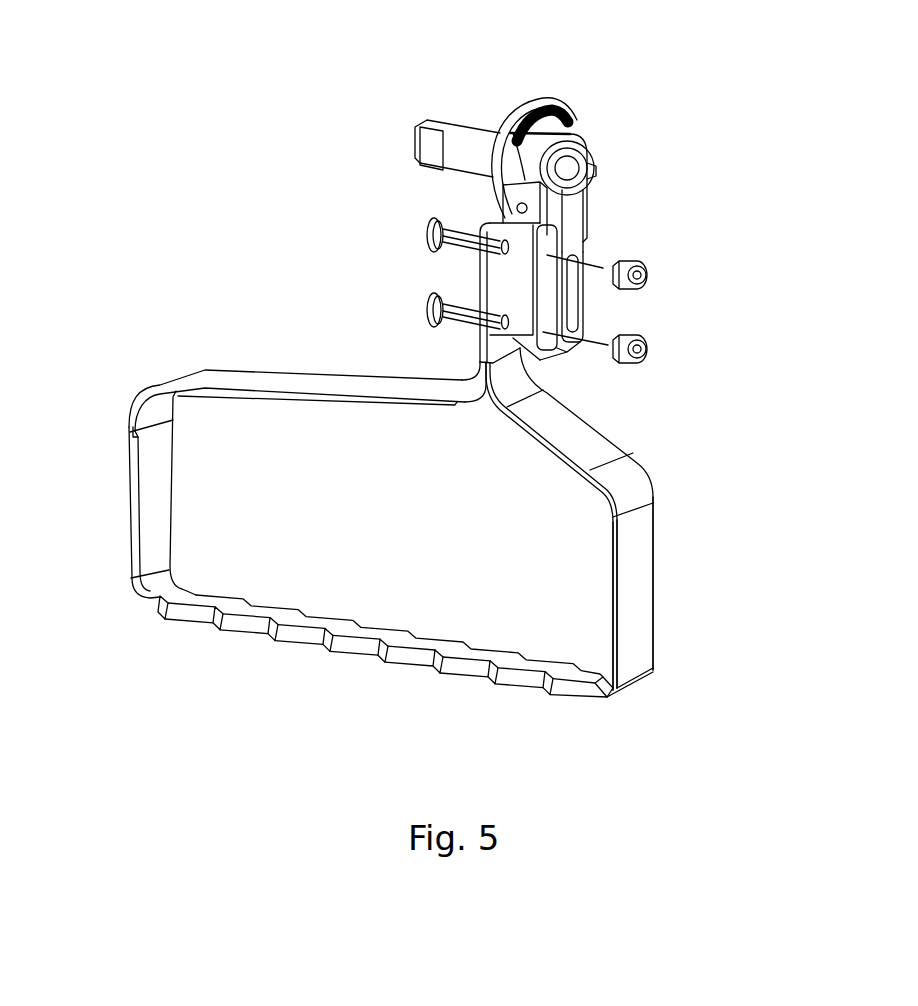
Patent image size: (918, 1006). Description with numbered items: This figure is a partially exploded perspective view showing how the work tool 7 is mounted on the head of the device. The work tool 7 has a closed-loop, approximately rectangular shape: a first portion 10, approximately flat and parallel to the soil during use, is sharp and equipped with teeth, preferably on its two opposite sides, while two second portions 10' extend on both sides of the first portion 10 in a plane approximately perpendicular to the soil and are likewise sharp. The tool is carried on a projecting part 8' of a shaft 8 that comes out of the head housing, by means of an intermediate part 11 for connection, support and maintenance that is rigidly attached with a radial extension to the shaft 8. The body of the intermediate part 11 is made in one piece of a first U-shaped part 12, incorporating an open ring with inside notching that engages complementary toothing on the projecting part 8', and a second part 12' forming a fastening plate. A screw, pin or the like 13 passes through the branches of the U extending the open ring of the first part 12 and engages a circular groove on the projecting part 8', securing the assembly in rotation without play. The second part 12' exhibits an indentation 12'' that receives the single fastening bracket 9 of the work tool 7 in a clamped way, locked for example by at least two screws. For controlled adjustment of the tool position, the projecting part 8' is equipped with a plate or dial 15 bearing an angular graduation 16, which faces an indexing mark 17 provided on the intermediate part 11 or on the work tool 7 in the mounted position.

The work tool 7 is at (640, 692).
The shaft 8 is at (457, 117).
The projecting part of the shaft 8' is at (646, 151).
The fastening bracket 9 is at (498, 277).
The first portion 10 is at (385, 657).
The second portions 10' is at (415, 540).
The intermediate part 11 is at (607, 188).
The first U-shaped part 12 is at (609, 226).
The second part forming a fastening plate 12' is at (650, 292).
The indentation 12'' is at (399, 292).
The screw, pin or the like 13 is at (516, 208).
The plate or dial 15 is at (600, 142).
The angular graduation 16 is at (540, 100).
The indexing mark 17 is at (507, 150).